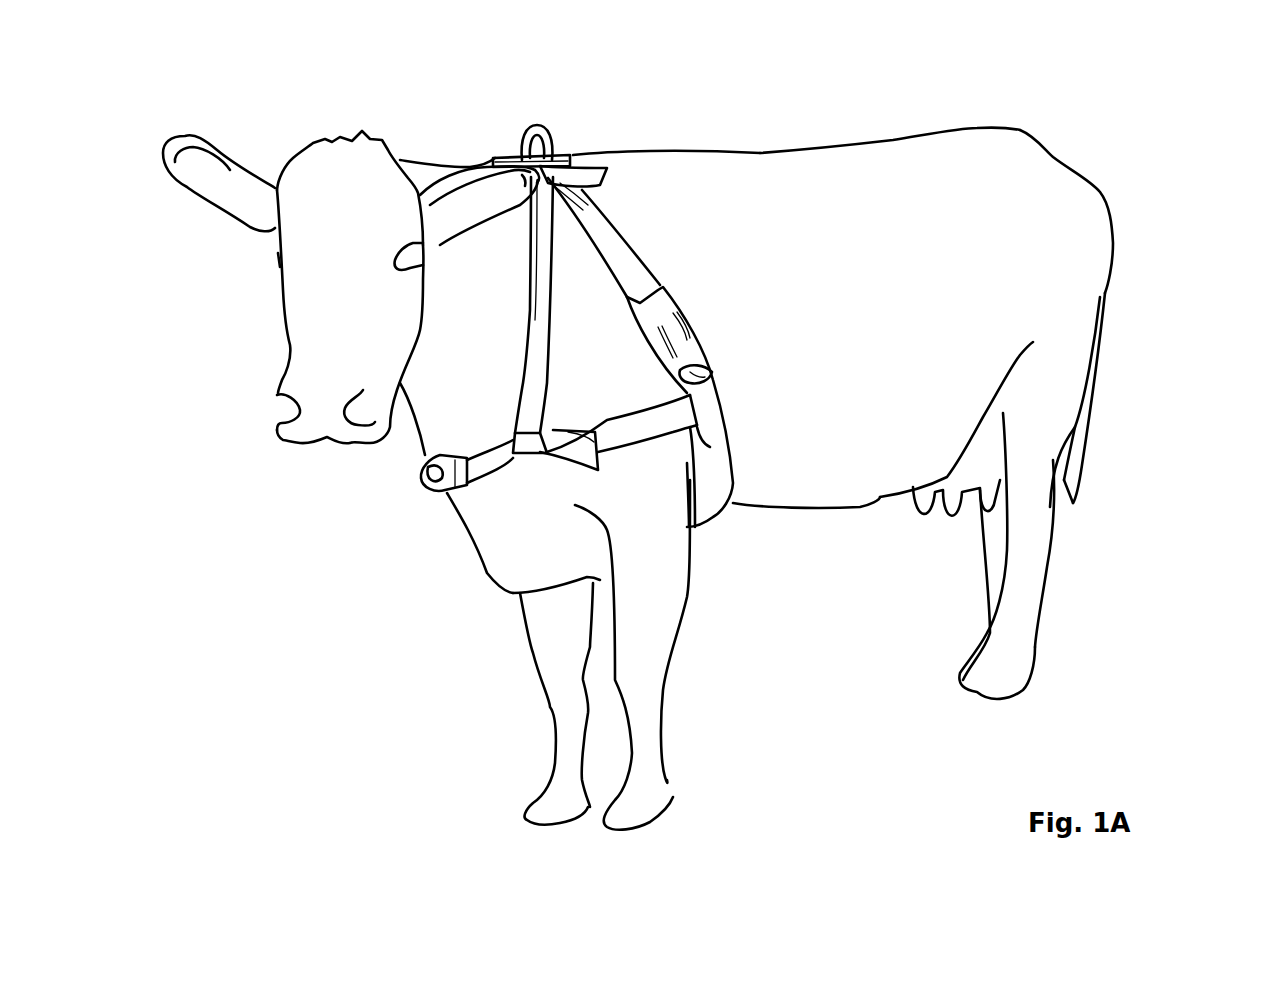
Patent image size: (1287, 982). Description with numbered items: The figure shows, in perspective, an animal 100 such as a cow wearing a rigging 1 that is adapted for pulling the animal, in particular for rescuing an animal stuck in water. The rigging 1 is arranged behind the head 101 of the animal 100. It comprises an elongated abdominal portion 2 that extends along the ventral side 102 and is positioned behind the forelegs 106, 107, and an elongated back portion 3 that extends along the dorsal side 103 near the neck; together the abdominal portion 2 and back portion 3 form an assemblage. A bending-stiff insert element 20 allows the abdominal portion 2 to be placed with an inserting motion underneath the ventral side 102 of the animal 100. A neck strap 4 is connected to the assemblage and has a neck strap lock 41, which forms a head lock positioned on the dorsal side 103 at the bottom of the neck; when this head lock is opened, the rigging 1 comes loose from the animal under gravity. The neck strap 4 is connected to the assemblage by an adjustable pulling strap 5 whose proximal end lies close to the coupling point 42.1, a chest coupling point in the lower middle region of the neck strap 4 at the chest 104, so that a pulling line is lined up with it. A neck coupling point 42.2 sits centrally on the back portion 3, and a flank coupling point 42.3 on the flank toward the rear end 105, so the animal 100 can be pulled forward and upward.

The rigging 1 is at (673, 137).
The abdominal portion 2 is at (737, 527).
The insert element 20 is at (713, 503).
The back portion 3 is at (610, 237).
The neck strap 4 is at (537, 347).
The pulling strap 5 is at (613, 437).
The neck strap lock 41 is at (512, 150).
The coupling point to neck strap 42.1 is at (423, 497).
The neck coupling point 42.2 is at (537, 128).
The side flank coupling point 42.3 is at (713, 380).
The animal 100 is at (1000, 140).
The head 101 is at (330, 183).
The ventral side 102 is at (880, 497).
The dorsal side 103 is at (880, 175).
The chest 104 is at (507, 535).
The rear end 105 is at (1090, 213).
The left foreleg 106 is at (652, 745).
The right foreleg 107 is at (553, 652).